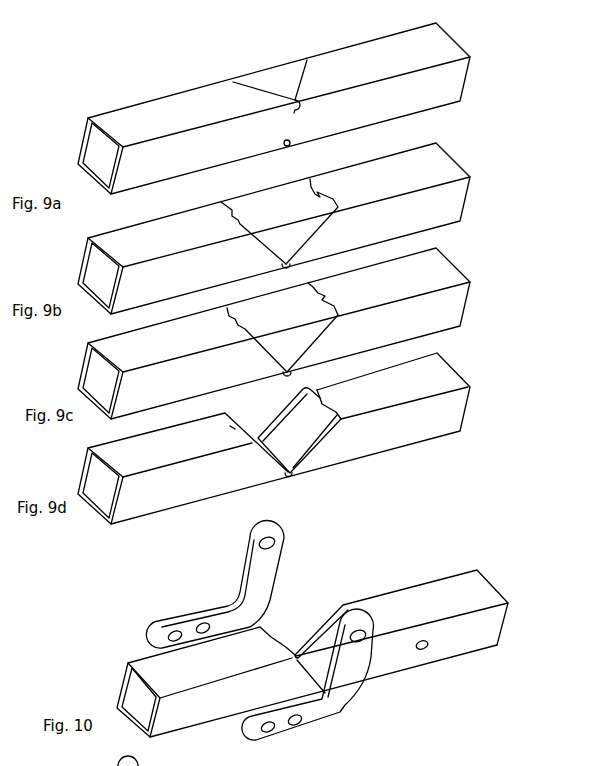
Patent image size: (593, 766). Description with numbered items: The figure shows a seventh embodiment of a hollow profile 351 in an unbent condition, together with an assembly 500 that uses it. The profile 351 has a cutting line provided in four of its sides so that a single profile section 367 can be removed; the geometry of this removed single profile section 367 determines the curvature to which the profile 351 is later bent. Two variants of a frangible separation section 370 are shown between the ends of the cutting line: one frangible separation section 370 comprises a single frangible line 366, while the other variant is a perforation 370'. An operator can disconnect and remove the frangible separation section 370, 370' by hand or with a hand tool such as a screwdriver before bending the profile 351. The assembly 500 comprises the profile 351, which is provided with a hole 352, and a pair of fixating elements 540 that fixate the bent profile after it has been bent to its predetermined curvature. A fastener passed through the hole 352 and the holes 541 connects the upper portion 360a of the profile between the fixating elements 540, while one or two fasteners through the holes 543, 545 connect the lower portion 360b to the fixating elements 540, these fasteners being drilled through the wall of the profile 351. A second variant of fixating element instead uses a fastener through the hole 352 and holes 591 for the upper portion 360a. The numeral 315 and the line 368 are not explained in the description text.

In FIG. 9A, the profile 351 is at (262, 107).
In FIG. 9B, the profile 351 is at (303, 223).
In FIG. 9C, the profile 351 is at (310, 331).
In FIG. 9D, the profile 351 is at (474, 367).
In FIG. 9C, the frangible line 366 is at (318, 300).
In FIG. 9A, the single profile section 367 is at (277, 82).
In FIG. 9B, the single profile section 367 is at (268, 205).
In FIG. 9C, the single profile section 367 is at (258, 310).
In FIG. 9A, the cut line 368 is at (303, 78).
In FIG. 9B, the cut line 368 is at (314, 242).
In FIG. 9C, the cut line 368 is at (318, 342).
In FIG. 9C, the frangible separation section 370 is at (366, 289).
In FIG. 9B, the perforation 370' is at (364, 186).
In FIG. 10, the assembly 500 is at (285, 638).
In FIG. 10, the upper portion 360a is at (420, 619).
In FIG. 10, the lower portion 360b is at (170, 678).
In FIG. 10, the tube 315 is at (429, 619).
In FIG. 10, the fixating element 540 is at (283, 638).
In FIG. 10, the hole 541 is at (275, 542).
In FIG. 10, the hole 543 is at (200, 622).
In FIG. 10, the hole 545 is at (172, 636).
In FIG. 10, the hole 352 is at (428, 650).
In FIG. 10, the hole 591 is at (127, 760).